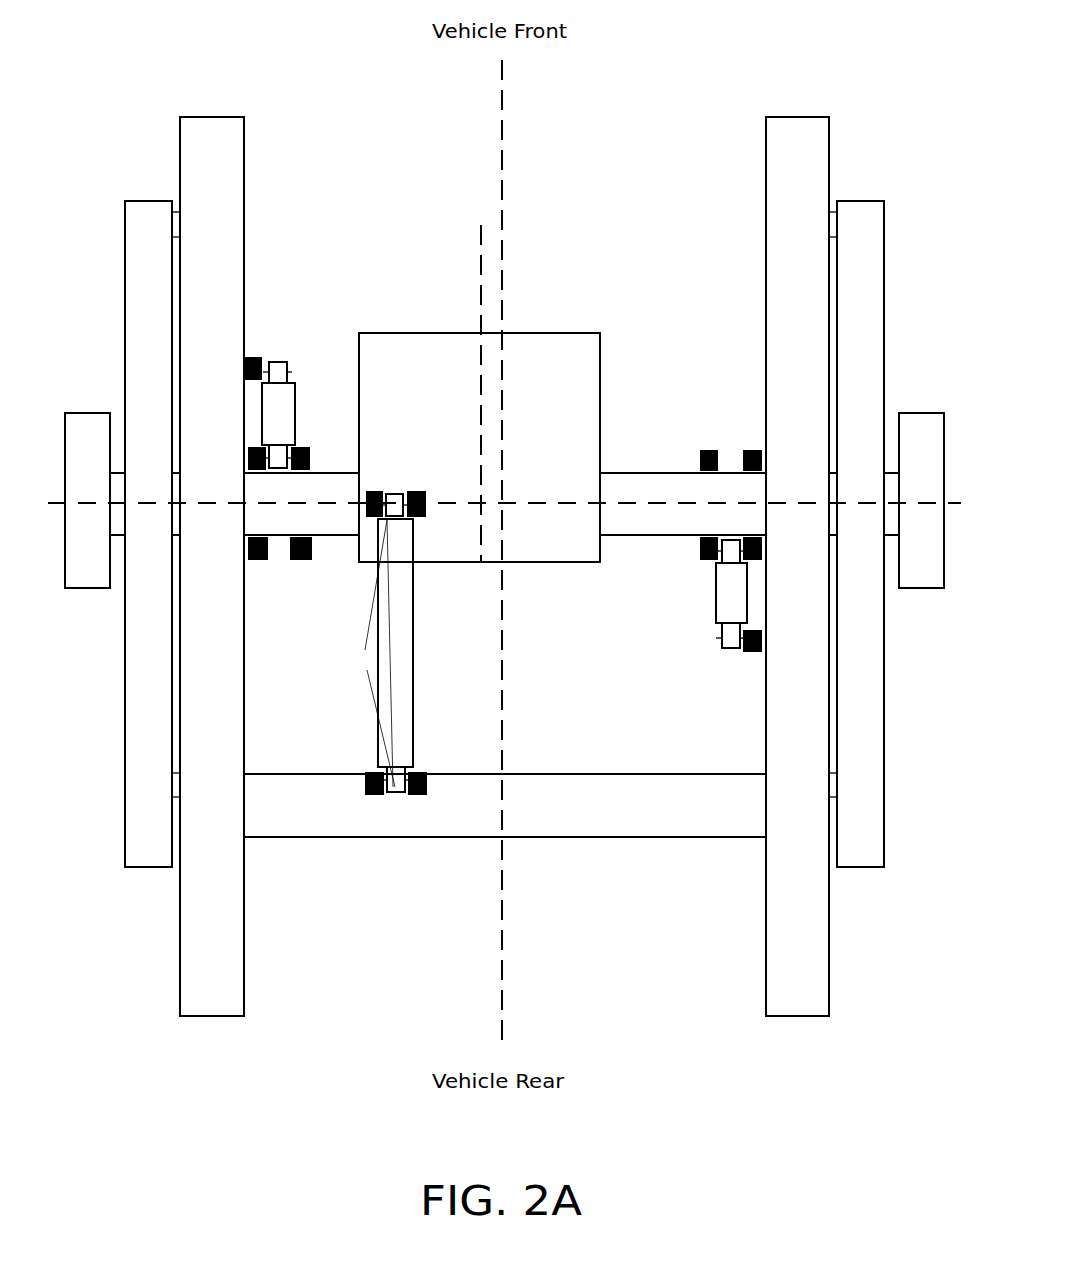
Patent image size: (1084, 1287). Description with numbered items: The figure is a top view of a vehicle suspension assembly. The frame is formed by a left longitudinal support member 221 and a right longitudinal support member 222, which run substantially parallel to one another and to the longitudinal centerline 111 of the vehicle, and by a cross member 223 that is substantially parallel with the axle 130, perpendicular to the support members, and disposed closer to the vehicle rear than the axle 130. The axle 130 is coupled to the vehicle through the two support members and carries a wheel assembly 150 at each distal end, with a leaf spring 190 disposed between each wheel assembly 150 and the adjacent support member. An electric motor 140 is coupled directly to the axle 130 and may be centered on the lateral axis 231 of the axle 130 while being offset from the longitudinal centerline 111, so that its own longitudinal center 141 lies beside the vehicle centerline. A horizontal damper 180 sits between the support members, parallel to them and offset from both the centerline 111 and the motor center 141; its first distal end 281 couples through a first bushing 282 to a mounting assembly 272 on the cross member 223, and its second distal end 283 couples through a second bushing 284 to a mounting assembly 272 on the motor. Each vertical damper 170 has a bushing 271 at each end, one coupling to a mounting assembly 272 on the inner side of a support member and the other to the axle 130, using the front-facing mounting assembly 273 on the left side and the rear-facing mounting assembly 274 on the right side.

The longitudinal centerline 111 is at (558, 551).
The axle 130 is at (504, 474).
The electric motor 140 is at (509, 420).
The longitudinal center 141 is at (439, 389).
The wheel assembly 150 is at (510, 533).
The vertical damper 170 is at (504, 501).
The horizontal damper 180 is at (435, 643).
The leaf spring 190 is at (519, 568).
The left longitudinal support member 221 is at (163, 569).
The right longitudinal support member 222 is at (748, 577).
The cross member 223 is at (505, 837).
The lateral axis 231 is at (503, 421).
The bushing 271 is at (318, 688).
The mounting assembly 272 is at (503, 523).
The front-facing mounting assembly 273 is at (505, 422).
The rear-facing mounting assembly 274 is at (505, 581).
The first distal end 281 is at (349, 767).
The first bushing 282 is at (367, 670).
The second distal end 283 is at (368, 540).
The second bushing 284 is at (365, 650).